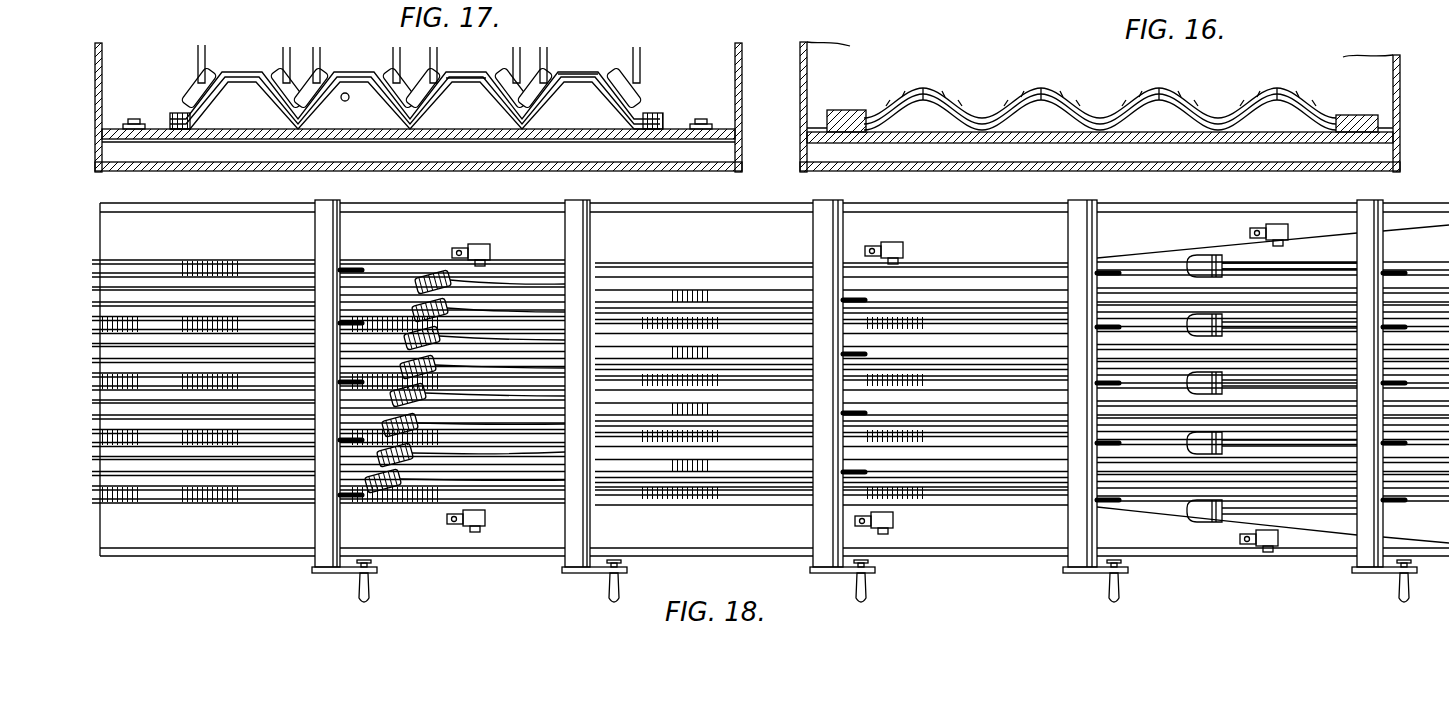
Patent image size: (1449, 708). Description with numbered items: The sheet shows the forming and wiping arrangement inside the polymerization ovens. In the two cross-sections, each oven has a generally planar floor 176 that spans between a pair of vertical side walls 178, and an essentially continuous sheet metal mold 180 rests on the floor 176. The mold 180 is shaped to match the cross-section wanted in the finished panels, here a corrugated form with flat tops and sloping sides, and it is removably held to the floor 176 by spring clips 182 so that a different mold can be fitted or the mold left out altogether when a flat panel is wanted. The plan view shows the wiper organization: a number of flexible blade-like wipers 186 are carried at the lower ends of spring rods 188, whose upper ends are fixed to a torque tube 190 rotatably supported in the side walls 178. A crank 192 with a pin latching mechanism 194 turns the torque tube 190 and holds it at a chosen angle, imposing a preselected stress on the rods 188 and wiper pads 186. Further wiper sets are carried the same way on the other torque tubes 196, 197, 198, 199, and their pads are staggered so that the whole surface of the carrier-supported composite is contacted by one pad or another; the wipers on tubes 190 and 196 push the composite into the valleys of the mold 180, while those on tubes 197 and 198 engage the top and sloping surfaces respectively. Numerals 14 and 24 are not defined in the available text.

In FIG. 17, the corrugated sheet 14 is at (575, 103).
In FIG. 17, the top flat portion of corrugation 24 is at (587, 74).
In FIG. 17, the floor 176 is at (468, 135).
In FIG. 17, the side wall 178 is at (102, 80).
In FIG. 17, the sheet metal mold 180 is at (347, 93).
In FIG. 17, the spring clip 182 is at (139, 119).
In FIG. 18, the spring clip 182 is at (465, 247).
In FIG. 18, the wiper 186 is at (1215, 233).
In FIG. 18, the spring rod 188 is at (1255, 268).
In FIG. 18, the torque tube 190 is at (1383, 212).
In FIG. 18, the crank 192 is at (352, 573).
In FIG. 18, the pin latching mechanism 194 is at (372, 568).
In FIG. 18, the torque tube 196 is at (1068, 237).
In FIG. 18, the torque tube 197 is at (813, 242).
In FIG. 18, the torque tube 198 is at (592, 243).
In FIG. 18, the torque tube 199 is at (315, 236).